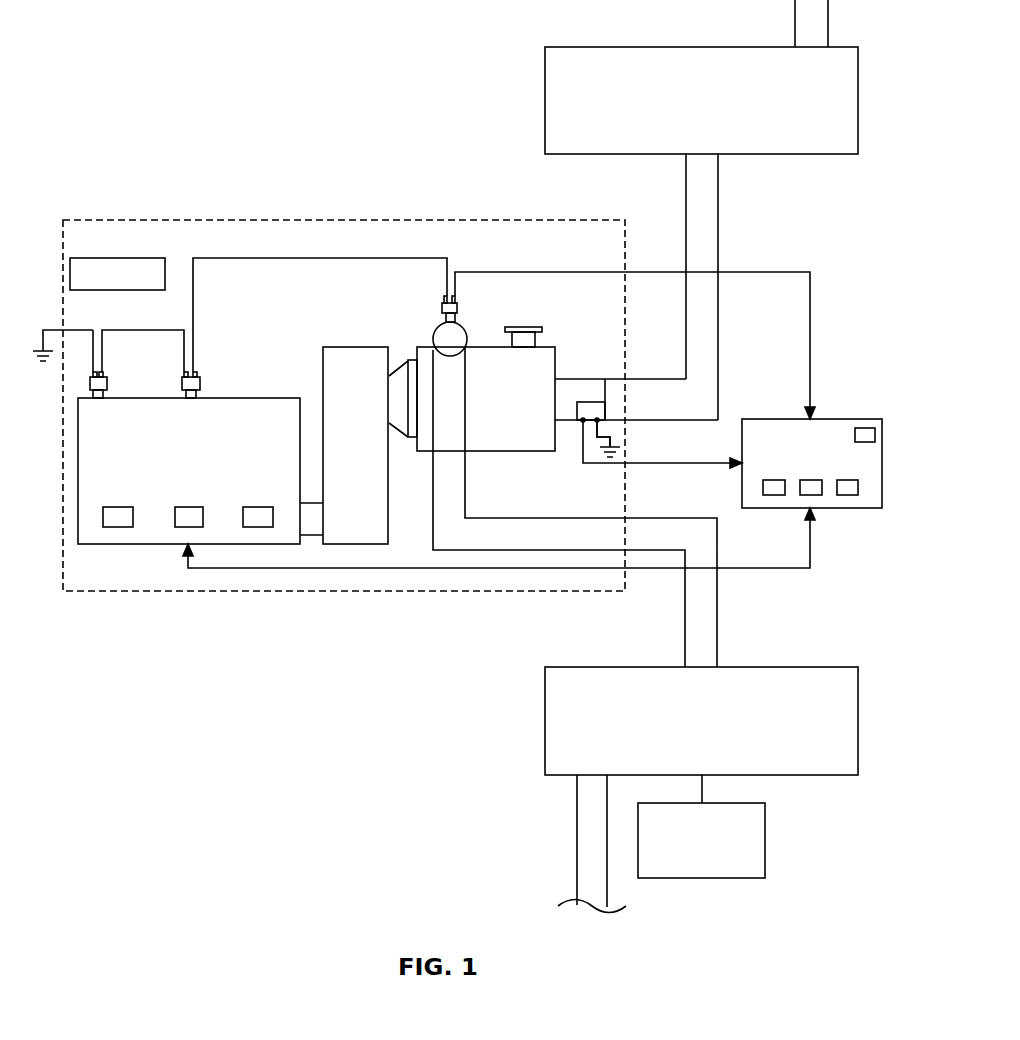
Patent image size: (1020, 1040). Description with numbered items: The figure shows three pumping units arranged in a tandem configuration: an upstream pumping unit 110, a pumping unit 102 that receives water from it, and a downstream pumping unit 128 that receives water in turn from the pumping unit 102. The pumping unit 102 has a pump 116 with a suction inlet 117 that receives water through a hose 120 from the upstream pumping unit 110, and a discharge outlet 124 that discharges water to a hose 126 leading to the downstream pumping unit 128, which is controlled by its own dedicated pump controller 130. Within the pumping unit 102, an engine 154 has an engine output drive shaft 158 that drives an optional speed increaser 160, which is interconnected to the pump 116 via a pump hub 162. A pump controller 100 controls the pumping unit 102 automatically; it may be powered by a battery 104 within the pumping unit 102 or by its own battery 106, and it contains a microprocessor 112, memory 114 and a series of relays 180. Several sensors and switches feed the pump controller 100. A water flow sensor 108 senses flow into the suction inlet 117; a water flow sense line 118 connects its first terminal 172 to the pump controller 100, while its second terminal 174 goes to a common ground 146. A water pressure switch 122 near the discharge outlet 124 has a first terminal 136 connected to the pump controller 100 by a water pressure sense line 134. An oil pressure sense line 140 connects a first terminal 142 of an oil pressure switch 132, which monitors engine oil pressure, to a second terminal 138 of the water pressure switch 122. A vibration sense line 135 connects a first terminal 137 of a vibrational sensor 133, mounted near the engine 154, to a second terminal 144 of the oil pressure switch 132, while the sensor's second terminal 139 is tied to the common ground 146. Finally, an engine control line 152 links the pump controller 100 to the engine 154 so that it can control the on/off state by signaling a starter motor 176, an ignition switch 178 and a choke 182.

The pump controller 100 is at (785, 419).
The pumping unit 102 is at (133, 218).
The battery 104 is at (130, 258).
The battery 106 is at (772, 497).
The water flow sensor 108 is at (597, 410).
The upstream pumping unit 110 is at (610, 47).
The microprocessor 112 is at (812, 497).
The memory 114 is at (848, 497).
The pump 116 is at (548, 346).
The suction inlet 117 is at (560, 379).
The water flow sense line 118 is at (652, 464).
The hose 120 is at (718, 214).
The water pressure switch 122 is at (441, 308).
The discharge outlet 124 is at (434, 336).
The hose 126 is at (718, 612).
The downstream pumping unit 128 is at (612, 667).
The pump controller 130 is at (766, 843).
The oil pressure switch 132 is at (201, 386).
The vibrational sensor 133 is at (87, 388).
The water pressure sense line 134 is at (522, 272).
The vibration sense line 135 is at (117, 330).
The first terminal 136 is at (458, 303).
The first terminal 137 is at (108, 380).
The second terminal 138 is at (440, 300).
The second terminal 139 is at (89, 378).
The oil pressure sense line 140 is at (257, 258).
The first terminal 142 is at (197, 374).
The second terminal 144 is at (182, 374).
The common ground 146 is at (47, 352).
The engine control line 152 is at (210, 568).
The engine 154 is at (290, 466).
The engine output drive shaft 158 is at (312, 538).
The speed increaser 160 is at (350, 347).
The pump hub 162 is at (395, 425).
The first terminal 172 is at (583, 422).
The second terminal 174 is at (612, 420).
The starter motor 176 is at (118, 507).
The ignition switch 178 is at (190, 507).
The relays 180 is at (863, 424).
The choke 182 is at (258, 507).